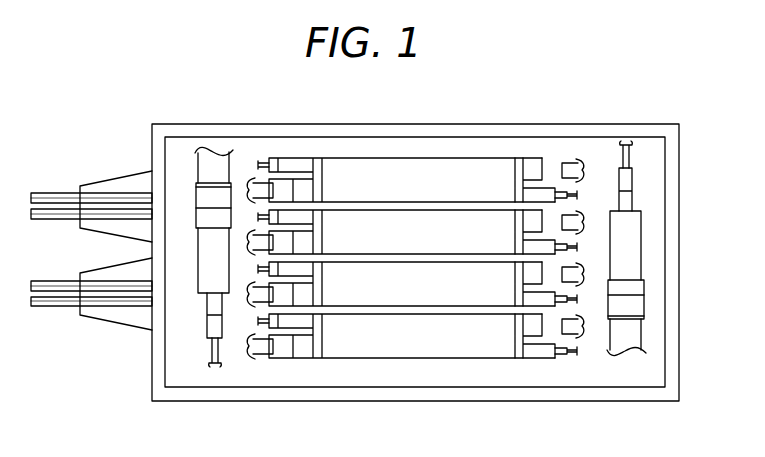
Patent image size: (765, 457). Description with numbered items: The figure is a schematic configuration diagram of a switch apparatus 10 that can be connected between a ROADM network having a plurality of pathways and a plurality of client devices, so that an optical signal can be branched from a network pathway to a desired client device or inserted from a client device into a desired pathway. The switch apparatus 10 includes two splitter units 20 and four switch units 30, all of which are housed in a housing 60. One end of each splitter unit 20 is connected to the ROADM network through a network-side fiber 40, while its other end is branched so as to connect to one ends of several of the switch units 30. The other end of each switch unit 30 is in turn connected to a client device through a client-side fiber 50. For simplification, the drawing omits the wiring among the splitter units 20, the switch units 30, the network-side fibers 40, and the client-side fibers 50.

The switch apparatus 10 is at (68, 95).
The splitter unit 20 is at (203, 293).
The switch unit 30 is at (402, 350).
The network-side fiber 40 is at (58, 197).
The client-side fiber 50 is at (58, 217).
The housing 60 is at (296, 133).